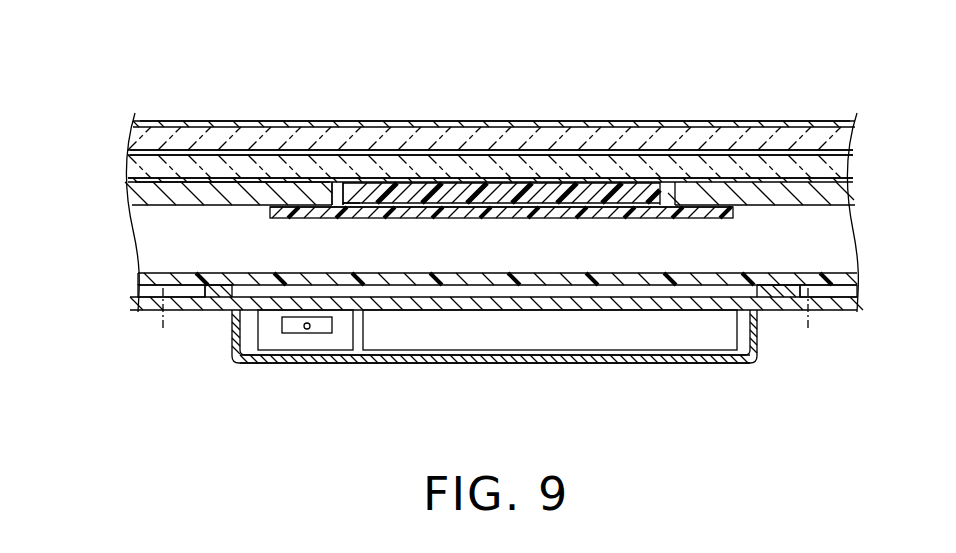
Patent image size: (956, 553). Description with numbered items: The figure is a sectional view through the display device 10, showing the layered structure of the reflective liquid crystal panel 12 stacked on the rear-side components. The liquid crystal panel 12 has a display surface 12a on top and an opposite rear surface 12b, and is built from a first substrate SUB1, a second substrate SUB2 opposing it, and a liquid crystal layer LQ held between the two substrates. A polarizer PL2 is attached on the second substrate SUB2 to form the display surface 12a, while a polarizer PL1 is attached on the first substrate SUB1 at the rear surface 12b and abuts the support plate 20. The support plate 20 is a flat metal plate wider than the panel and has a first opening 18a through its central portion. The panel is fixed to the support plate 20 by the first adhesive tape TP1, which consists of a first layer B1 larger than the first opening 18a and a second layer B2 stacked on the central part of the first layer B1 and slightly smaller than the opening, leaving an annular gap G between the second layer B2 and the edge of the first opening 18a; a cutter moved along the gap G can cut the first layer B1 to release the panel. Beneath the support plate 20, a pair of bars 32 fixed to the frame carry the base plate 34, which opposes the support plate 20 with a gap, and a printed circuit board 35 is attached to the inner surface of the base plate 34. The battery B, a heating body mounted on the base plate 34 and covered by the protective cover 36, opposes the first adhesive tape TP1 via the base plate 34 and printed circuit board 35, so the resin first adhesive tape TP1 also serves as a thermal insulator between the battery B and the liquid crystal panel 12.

The display device 10 is at (185, 86).
The liquid crystal panel 12 is at (753, 110).
The display surface 12a is at (257, 121).
The rear surface 12b is at (178, 182).
The polarizer PL2 is at (135, 124).
The second substrate SUB2 is at (133, 140).
The liquid crystal layer LQ is at (130, 154).
The first substrate SUB1 is at (128, 167).
The polarizer PL1 is at (128, 180).
The support plate 20 is at (229, 195).
The gap G is at (340, 183).
The first opening 18a is at (340, 205).
The first layer B1 is at (507, 210).
The second layer B2 is at (563, 200).
The first adhesive tape TP1 is at (643, 218).
The printed circuit board 35 is at (762, 280).
The bars 32 is at (152, 297).
The base plate 34 is at (624, 308).
The protective cover 36 is at (303, 363).
The battery B is at (490, 335).